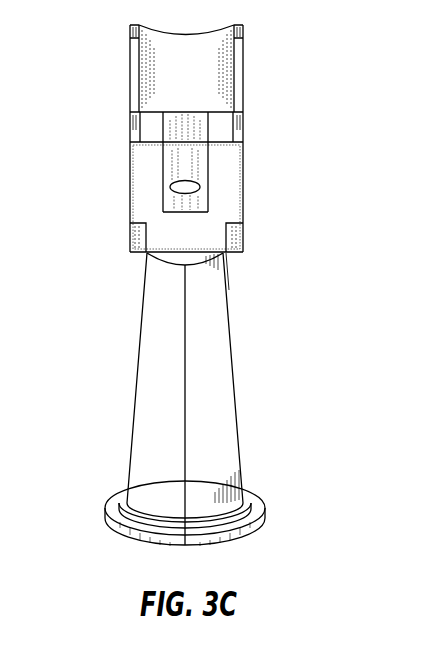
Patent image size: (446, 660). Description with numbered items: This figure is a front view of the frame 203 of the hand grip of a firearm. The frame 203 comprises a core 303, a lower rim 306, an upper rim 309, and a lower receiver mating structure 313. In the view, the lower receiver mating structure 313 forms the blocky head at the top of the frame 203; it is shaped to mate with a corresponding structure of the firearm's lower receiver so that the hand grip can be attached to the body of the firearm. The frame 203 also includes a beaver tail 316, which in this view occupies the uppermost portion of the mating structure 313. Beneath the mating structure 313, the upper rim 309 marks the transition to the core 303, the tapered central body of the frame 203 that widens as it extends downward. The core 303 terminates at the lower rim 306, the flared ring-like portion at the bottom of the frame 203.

The frame 203 is at (312, 182).
The lower receiver mating structure 313 is at (118, 28).
The beaver tail 316 is at (257, 28).
The upper rim 309 is at (234, 257).
The core 303 is at (150, 379).
The lower rim 306 is at (258, 502).